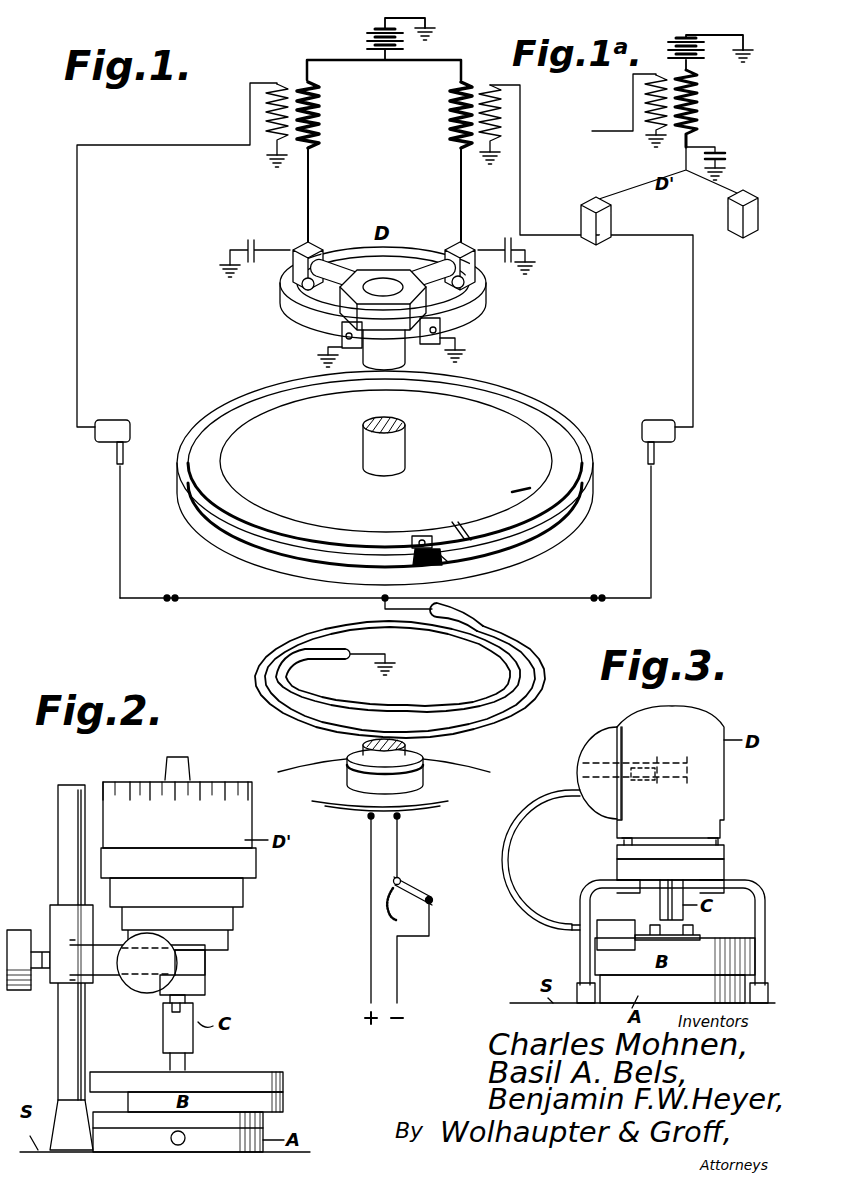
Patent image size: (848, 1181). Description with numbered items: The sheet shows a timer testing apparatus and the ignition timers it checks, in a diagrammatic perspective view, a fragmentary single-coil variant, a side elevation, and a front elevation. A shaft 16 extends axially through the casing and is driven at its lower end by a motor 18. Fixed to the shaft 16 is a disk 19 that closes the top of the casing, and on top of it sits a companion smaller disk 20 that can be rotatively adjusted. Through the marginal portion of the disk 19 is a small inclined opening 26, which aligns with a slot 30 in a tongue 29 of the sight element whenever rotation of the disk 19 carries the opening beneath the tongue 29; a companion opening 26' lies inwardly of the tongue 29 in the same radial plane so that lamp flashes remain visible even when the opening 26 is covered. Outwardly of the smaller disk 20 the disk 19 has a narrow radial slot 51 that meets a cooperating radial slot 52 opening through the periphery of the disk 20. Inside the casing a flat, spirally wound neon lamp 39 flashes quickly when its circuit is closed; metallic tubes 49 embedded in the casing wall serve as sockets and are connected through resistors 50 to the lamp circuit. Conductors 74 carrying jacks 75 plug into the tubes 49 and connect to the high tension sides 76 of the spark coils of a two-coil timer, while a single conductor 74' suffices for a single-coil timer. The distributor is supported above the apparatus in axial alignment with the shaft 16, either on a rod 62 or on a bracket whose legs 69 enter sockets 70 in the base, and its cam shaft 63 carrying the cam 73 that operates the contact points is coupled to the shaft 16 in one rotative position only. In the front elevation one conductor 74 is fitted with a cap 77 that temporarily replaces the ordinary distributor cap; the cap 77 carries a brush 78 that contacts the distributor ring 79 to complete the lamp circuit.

In FIG. 1, the shaft 16 is at (397, 441).
In FIG. 1, the motor 18 is at (447, 768).
In FIG. 1, the disk 19 is at (305, 530).
In FIG. 1, the companion smaller disk 20 is at (385, 478).
In FIG. 1, the opening 26 is at (415, 571).
In FIG. 1, the companion opening 26' is at (419, 524).
In FIG. 1, the tongue 29 is at (446, 560).
In FIG. 1, the slot 30 is at (432, 562).
In FIG. 1, the electric lamp 39 is at (428, 696).
In FIG. 1, the metallic tubes 49 is at (114, 471).
In FIG. 1, the resistors 50 is at (171, 594).
In FIG. 1, the radial slot 51 is at (475, 529).
In FIG. 1, the radial slot 52 is at (519, 477).
In FIG. 2, the rod 62 is at (62, 1040).
In FIG. 1, the cam shaft 63 is at (372, 280).
In FIG. 3, the legs 69 is at (583, 902).
In FIG. 3, the sockets 70 is at (590, 1000).
In FIG. 1, the cam 73 is at (392, 282).
In FIG. 1, the conductors 74 is at (385, 255).
In FIG. 3, the conductors 74 is at (541, 860).
In FIG. 1A, the conductor 74' is at (624, 115).
In FIG. 1, the jacks 75 is at (124, 452).
In FIG. 1, the high tension side of spark coil 76 is at (272, 114).
In FIG. 1A, the high tension side of spark coil 76 is at (650, 88).
In FIG. 3, the cap 77 is at (605, 740).
In FIG. 3, the brush 78 is at (635, 782).
In FIG. 3, the distributor ring 79 is at (675, 765).